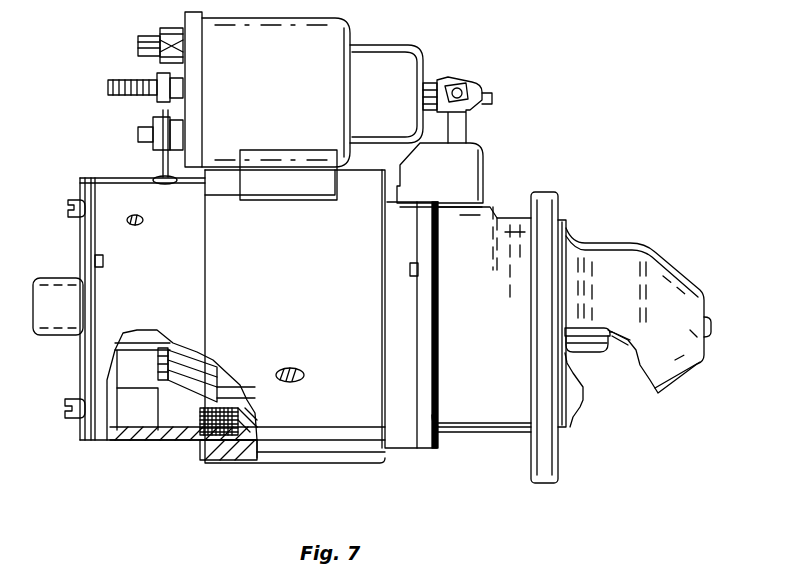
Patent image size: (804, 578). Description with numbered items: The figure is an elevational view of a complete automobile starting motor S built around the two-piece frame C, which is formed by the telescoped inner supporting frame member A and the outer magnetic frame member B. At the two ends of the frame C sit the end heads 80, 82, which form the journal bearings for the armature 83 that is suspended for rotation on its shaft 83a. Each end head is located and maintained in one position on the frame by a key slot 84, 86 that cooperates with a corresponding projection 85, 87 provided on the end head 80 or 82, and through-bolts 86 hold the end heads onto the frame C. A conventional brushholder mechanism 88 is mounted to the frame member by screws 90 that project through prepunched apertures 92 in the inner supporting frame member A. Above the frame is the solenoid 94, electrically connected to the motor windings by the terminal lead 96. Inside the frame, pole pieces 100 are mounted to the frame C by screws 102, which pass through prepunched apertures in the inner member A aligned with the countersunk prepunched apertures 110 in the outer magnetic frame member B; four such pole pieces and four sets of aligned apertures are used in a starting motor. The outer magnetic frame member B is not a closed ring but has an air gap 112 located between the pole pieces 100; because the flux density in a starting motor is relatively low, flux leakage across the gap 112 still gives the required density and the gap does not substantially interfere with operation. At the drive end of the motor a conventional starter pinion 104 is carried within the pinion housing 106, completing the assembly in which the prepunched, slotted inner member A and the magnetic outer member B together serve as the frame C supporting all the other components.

The solenoid 94 is at (342, 42).
The terminal lead 96 is at (160, 166).
The starting motor S is at (486, 147).
The end head 80 is at (86, 183).
The end head 82 is at (433, 228).
The armature 83 is at (190, 383).
The shaft 83a is at (617, 342).
The key slot 84 is at (103, 262).
The projection 85 is at (95, 258).
The through-bolt 86 is at (70, 203).
The projection 87 is at (418, 268).
The brushholder mechanism 88 is at (128, 420).
The screw 90 is at (141, 224).
The prepunched aperture 92 is at (128, 222).
The pole piece 100 is at (250, 432).
The screw 102 is at (303, 372).
The starter pinion 104 is at (580, 352).
The pinion housing 106 is at (620, 250).
The prepunched aperture 110 is at (287, 366).
The air gap 112 is at (300, 452).
The inner supporting frame member A is at (400, 440).
The outer magnetic frame member B is at (350, 437).
The two-piece frame C is at (412, 424).